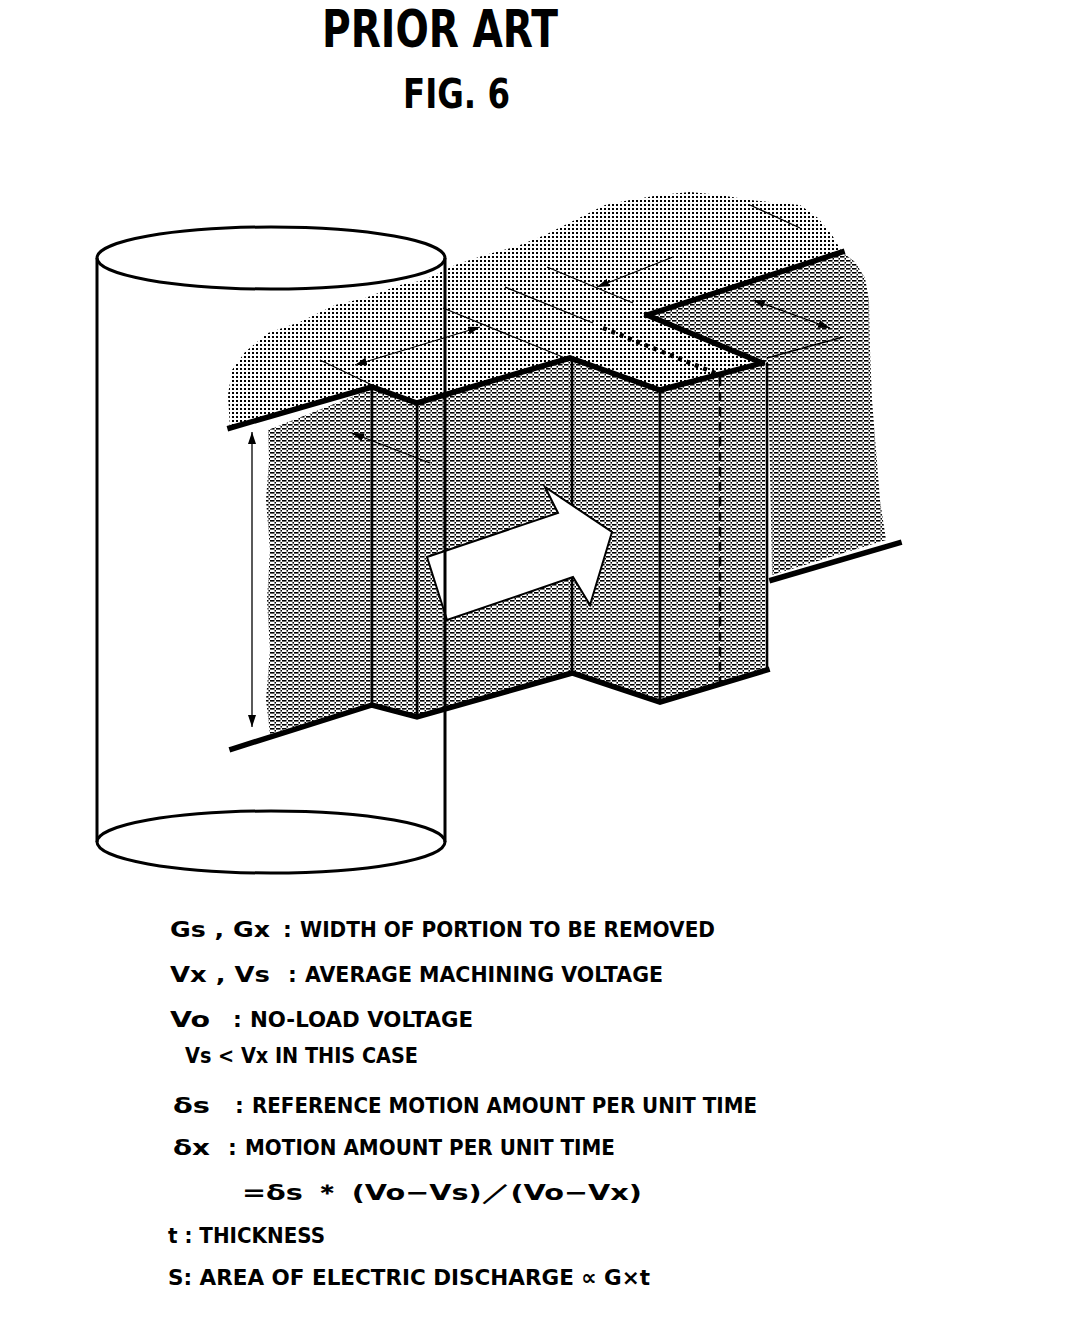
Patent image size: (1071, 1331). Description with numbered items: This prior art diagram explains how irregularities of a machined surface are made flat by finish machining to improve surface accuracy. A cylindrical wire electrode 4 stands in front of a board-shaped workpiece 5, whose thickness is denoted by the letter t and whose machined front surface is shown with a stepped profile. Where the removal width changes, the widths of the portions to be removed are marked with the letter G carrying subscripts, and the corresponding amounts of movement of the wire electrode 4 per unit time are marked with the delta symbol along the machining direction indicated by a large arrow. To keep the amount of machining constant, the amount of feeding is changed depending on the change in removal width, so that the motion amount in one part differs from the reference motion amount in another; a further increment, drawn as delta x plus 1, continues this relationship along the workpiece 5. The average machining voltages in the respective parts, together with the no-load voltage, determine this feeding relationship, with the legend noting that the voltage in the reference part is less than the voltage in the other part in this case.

The wire electrode 4 is at (97, 293).
The workpiece 5 is at (572, 460).
The motion amount increment 1 is at (772, 218).